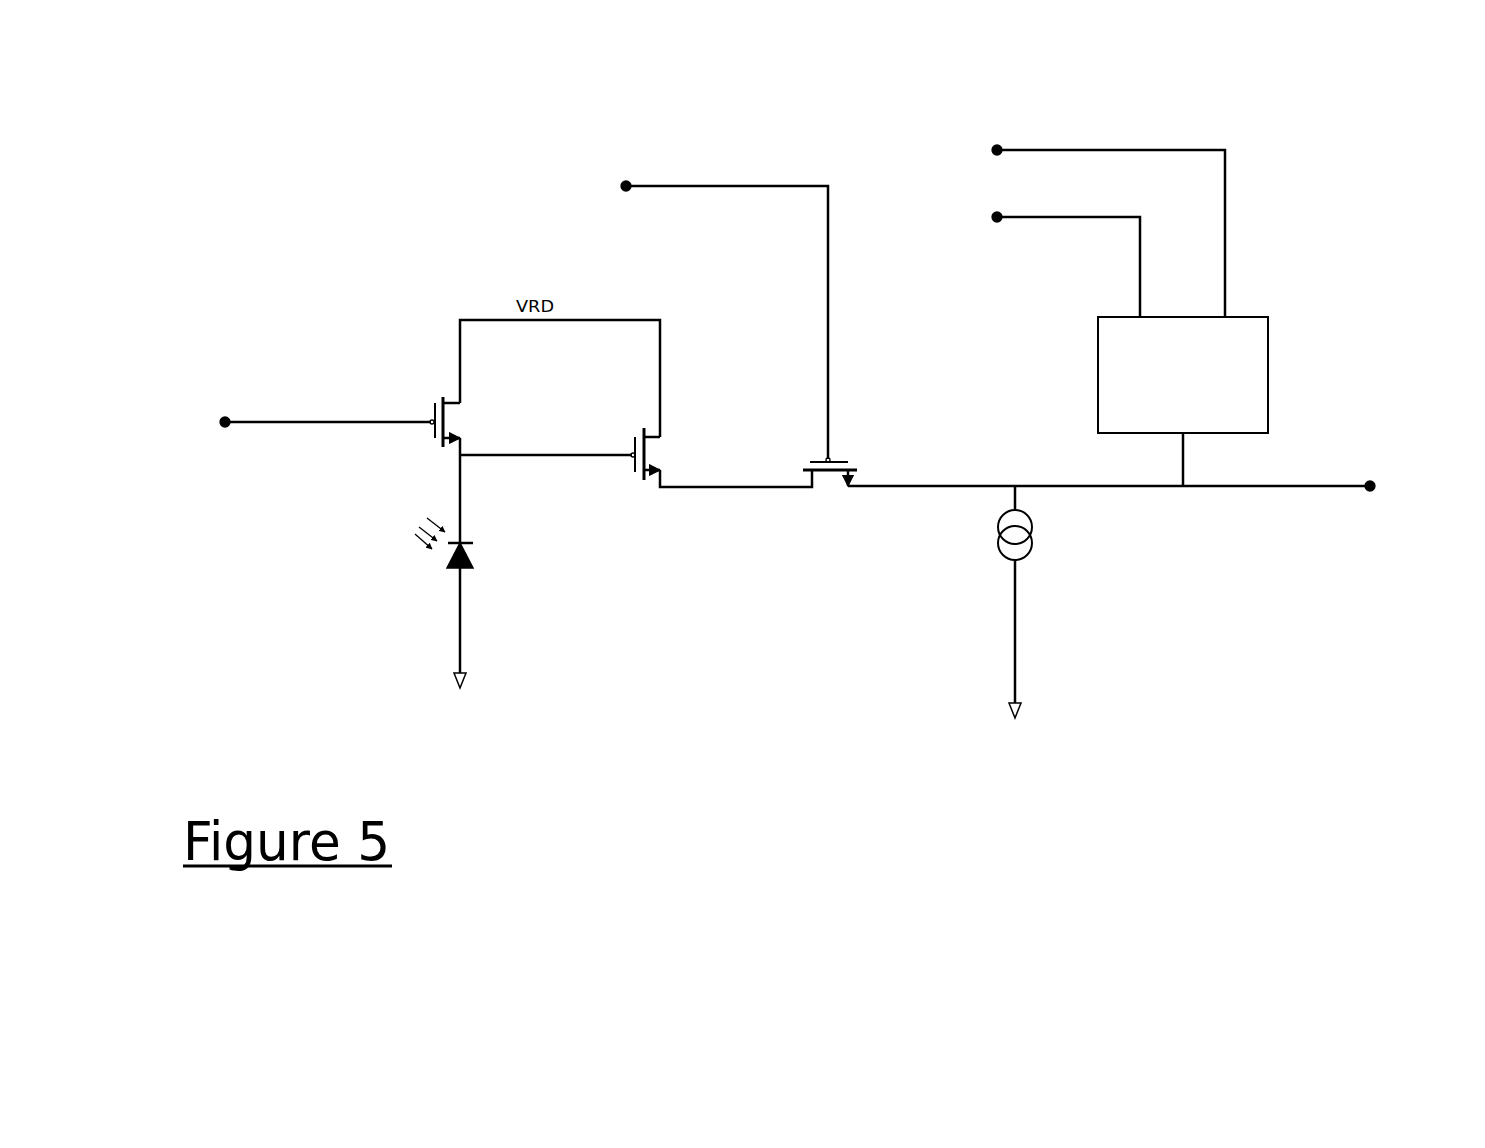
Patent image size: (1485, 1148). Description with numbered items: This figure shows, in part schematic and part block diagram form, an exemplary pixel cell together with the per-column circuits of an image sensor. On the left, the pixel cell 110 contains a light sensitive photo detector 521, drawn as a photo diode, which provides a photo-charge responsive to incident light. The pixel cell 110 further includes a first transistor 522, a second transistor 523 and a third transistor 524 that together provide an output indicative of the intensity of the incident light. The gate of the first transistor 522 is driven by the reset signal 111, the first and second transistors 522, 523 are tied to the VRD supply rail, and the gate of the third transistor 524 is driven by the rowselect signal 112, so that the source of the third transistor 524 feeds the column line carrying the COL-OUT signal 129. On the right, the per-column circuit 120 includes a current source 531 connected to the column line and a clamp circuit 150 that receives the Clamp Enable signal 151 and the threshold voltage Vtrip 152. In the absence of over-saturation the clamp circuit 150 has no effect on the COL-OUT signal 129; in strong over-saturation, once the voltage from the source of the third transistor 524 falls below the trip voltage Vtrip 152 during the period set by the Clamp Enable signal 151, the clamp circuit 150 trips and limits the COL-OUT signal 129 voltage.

The pixel cell circuit 110 is at (627, 655).
The reset signal 111 is at (280, 408).
The rowselect signal 112 is at (678, 306).
The per-column circuit 120 is at (1152, 653).
The COL-OUT signal 129 is at (1154, 472).
The clamp circuit 150 is at (1223, 359).
The Clamp Enable signal 151 is at (1058, 215).
The trip voltage Vtrip 152 is at (1016, 248).
The photo detector 521 is at (468, 550).
The first transistor 522 is at (465, 407).
The second transistor 523 is at (658, 443).
The third transistor 524 is at (855, 453).
The current source 531 is at (1032, 550).